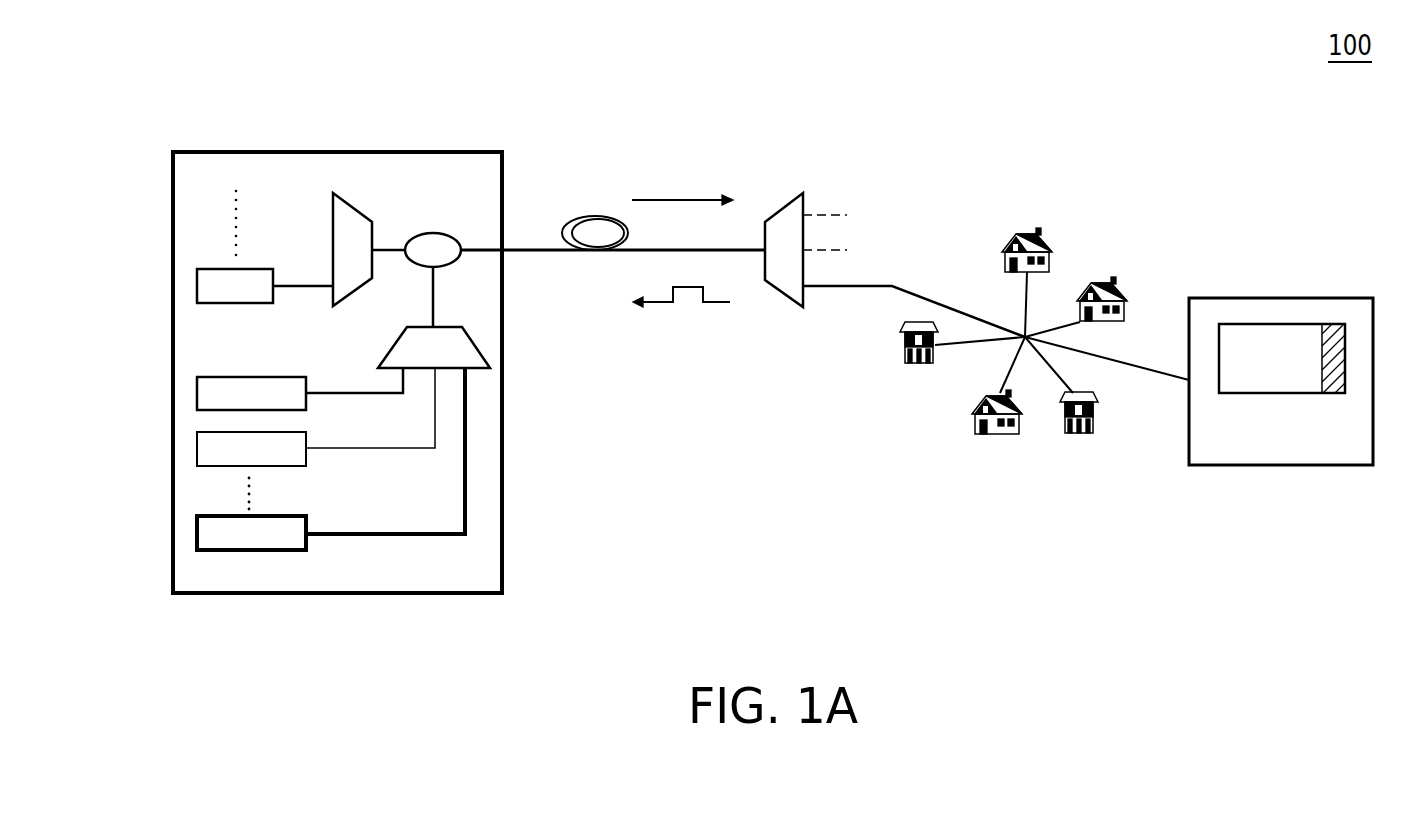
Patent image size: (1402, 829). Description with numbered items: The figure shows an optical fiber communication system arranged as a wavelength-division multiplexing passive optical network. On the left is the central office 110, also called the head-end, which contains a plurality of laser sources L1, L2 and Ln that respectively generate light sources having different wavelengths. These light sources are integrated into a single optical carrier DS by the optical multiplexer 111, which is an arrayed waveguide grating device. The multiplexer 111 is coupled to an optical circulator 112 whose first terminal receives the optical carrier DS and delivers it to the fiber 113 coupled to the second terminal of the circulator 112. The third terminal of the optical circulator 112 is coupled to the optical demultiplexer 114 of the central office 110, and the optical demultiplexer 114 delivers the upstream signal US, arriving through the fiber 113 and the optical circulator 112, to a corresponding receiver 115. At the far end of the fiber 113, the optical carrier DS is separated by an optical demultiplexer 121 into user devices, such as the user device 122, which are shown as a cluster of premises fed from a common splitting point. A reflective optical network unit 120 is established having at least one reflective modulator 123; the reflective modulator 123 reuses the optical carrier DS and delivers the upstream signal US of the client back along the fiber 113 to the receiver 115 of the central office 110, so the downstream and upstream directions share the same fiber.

The central office 110 is at (502, 487).
The optical multiplexer 111 is at (473, 340).
The optical circulator 112 is at (435, 233).
The fiber 113 is at (550, 248).
The optical demultiplexer 114 is at (356, 195).
The receiver 115 is at (197, 283).
The reflective optical network unit 120 is at (1352, 298).
The optical demultiplexer 121 is at (782, 205).
The user device 122 is at (1027, 228).
The reflective modulator 123 is at (1272, 324).
The laser source L1 is at (197, 386).
The laser source L2 is at (197, 440).
The laser source Ln is at (197, 524).
The optical carrier DS is at (676, 196).
The upstream signal US is at (715, 306).